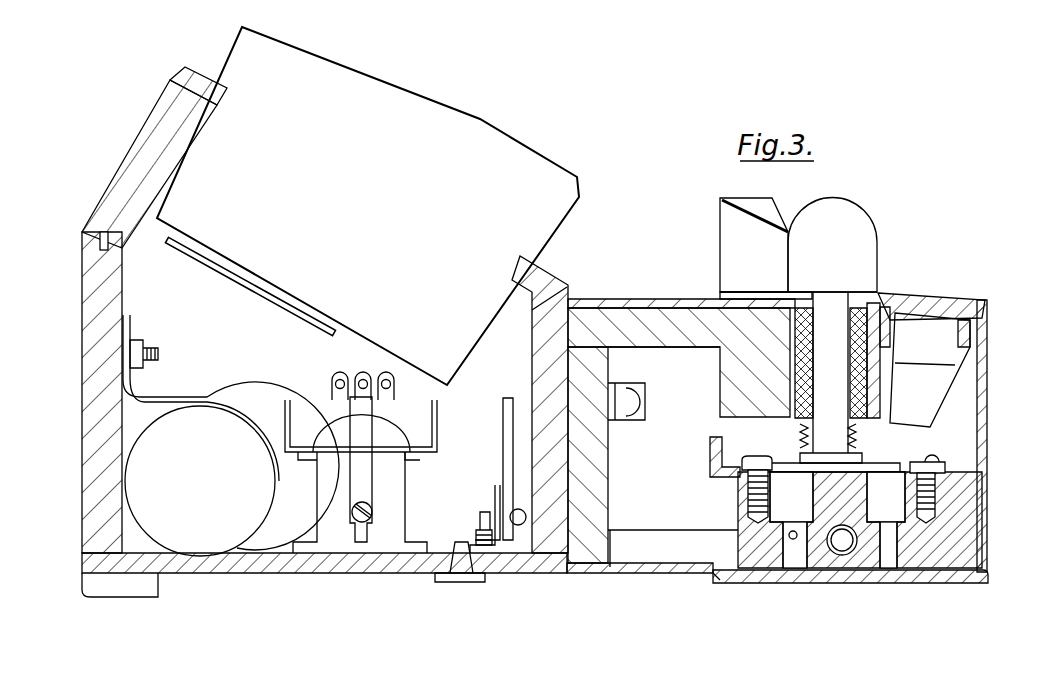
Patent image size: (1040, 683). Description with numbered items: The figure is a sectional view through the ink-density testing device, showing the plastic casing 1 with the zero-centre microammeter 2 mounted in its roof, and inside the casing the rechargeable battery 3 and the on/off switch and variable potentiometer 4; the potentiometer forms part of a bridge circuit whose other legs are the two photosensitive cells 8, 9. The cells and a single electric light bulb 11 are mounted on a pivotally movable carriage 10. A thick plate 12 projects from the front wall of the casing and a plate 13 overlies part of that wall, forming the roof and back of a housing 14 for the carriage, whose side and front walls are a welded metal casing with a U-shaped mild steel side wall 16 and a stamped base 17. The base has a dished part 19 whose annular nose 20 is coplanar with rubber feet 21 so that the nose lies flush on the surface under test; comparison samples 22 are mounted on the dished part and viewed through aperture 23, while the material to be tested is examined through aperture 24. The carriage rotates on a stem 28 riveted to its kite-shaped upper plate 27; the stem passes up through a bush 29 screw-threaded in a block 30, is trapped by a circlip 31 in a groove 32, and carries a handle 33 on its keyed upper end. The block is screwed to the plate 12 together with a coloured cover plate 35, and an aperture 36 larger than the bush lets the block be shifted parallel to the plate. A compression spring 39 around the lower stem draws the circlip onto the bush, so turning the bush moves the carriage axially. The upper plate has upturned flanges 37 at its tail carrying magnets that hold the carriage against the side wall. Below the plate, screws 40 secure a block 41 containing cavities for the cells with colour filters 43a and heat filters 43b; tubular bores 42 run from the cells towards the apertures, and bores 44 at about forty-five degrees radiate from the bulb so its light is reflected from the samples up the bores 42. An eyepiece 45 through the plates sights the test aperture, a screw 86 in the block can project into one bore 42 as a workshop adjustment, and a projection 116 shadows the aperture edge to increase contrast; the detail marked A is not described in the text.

The casing 1 is at (546, 292).
The zero-centre microammeter 2 is at (453, 207).
The rechargeable battery 3 is at (200, 481).
The on/off switch and variable potentiometer 4 is at (333, 440).
The photosensitive cell 8 is at (892, 426).
The photosensitive cell 9 is at (740, 540).
The pivotally movable carriage 10 is at (895, 388).
The electric light bulb 11 is at (842, 528).
The thick plate 12 is at (596, 325).
The plate 13 is at (600, 497).
The housing 14 is at (678, 495).
The side wall 16 is at (893, 360).
The base 17 is at (772, 580).
The dished part 19 is at (858, 551).
The annular nose 20 is at (953, 573).
The rubber feet 21 is at (138, 582).
The comparison samples of material 22 is at (843, 580).
The aperture 23 is at (798, 573).
The aperture 24 is at (917, 580).
The upper plate 27 is at (927, 427).
The stem 28 is at (875, 362).
The bush 29 is at (938, 305).
The block 30 is at (940, 303).
The circlip 31 is at (855, 347).
The groove 32 is at (823, 335).
The handle 33 is at (833, 235).
The coloured cover plate 35 is at (631, 306).
The aperture 36 is at (733, 300).
The upturned flanges 37 is at (710, 463).
The compression spring 39 is at (807, 440).
The screws 40 is at (747, 453).
The block 41 is at (890, 538).
The tubular bores 42 is at (788, 543).
The colour filters 43a is at (948, 470).
The heat filters 43b is at (932, 457).
The bores 44 is at (910, 543).
The eyepiece 45 is at (977, 300).
The screw 86 is at (797, 477).
The projection 116 is at (862, 555).
The switch A is at (510, 500).